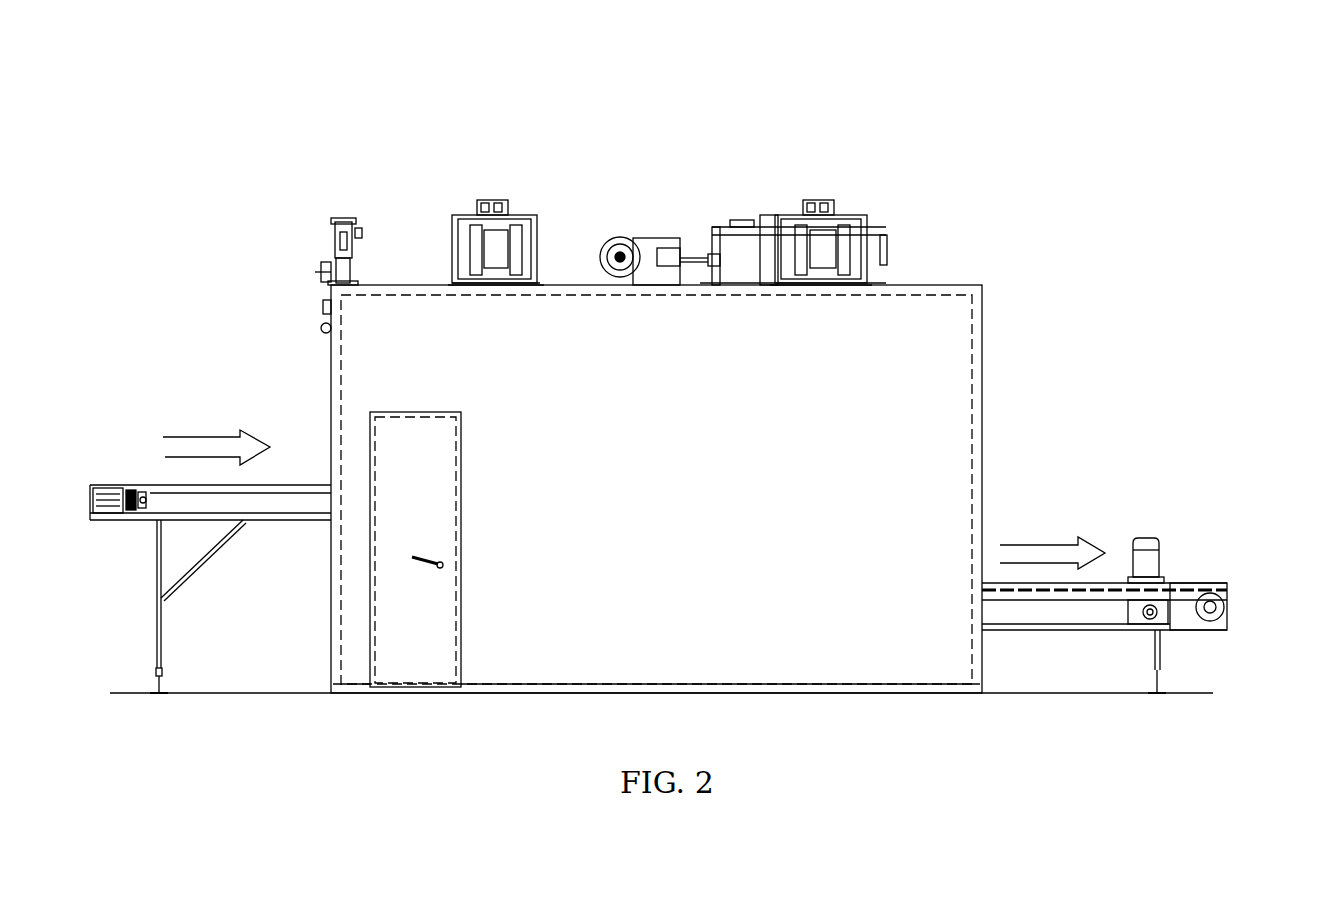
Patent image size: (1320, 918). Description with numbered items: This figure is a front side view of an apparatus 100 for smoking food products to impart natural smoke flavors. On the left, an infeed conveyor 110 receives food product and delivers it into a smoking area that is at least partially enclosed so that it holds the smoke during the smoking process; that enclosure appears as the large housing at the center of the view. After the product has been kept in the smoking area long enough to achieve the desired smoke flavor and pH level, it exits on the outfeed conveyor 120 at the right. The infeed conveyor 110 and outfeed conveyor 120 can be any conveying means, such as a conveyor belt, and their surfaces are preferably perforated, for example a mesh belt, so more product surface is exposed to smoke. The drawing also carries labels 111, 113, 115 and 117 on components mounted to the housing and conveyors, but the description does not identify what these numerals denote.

The apparatus 100 is at (648, 446).
The infeed conveyor 110 is at (178, 494).
The conveyor drive motor 111 is at (331, 210).
The access door 113 is at (381, 408).
The blower motor 115 is at (824, 198).
The outfeed conveyor motor 117 is at (1153, 532).
The outfeed conveyor 120 is at (1190, 585).